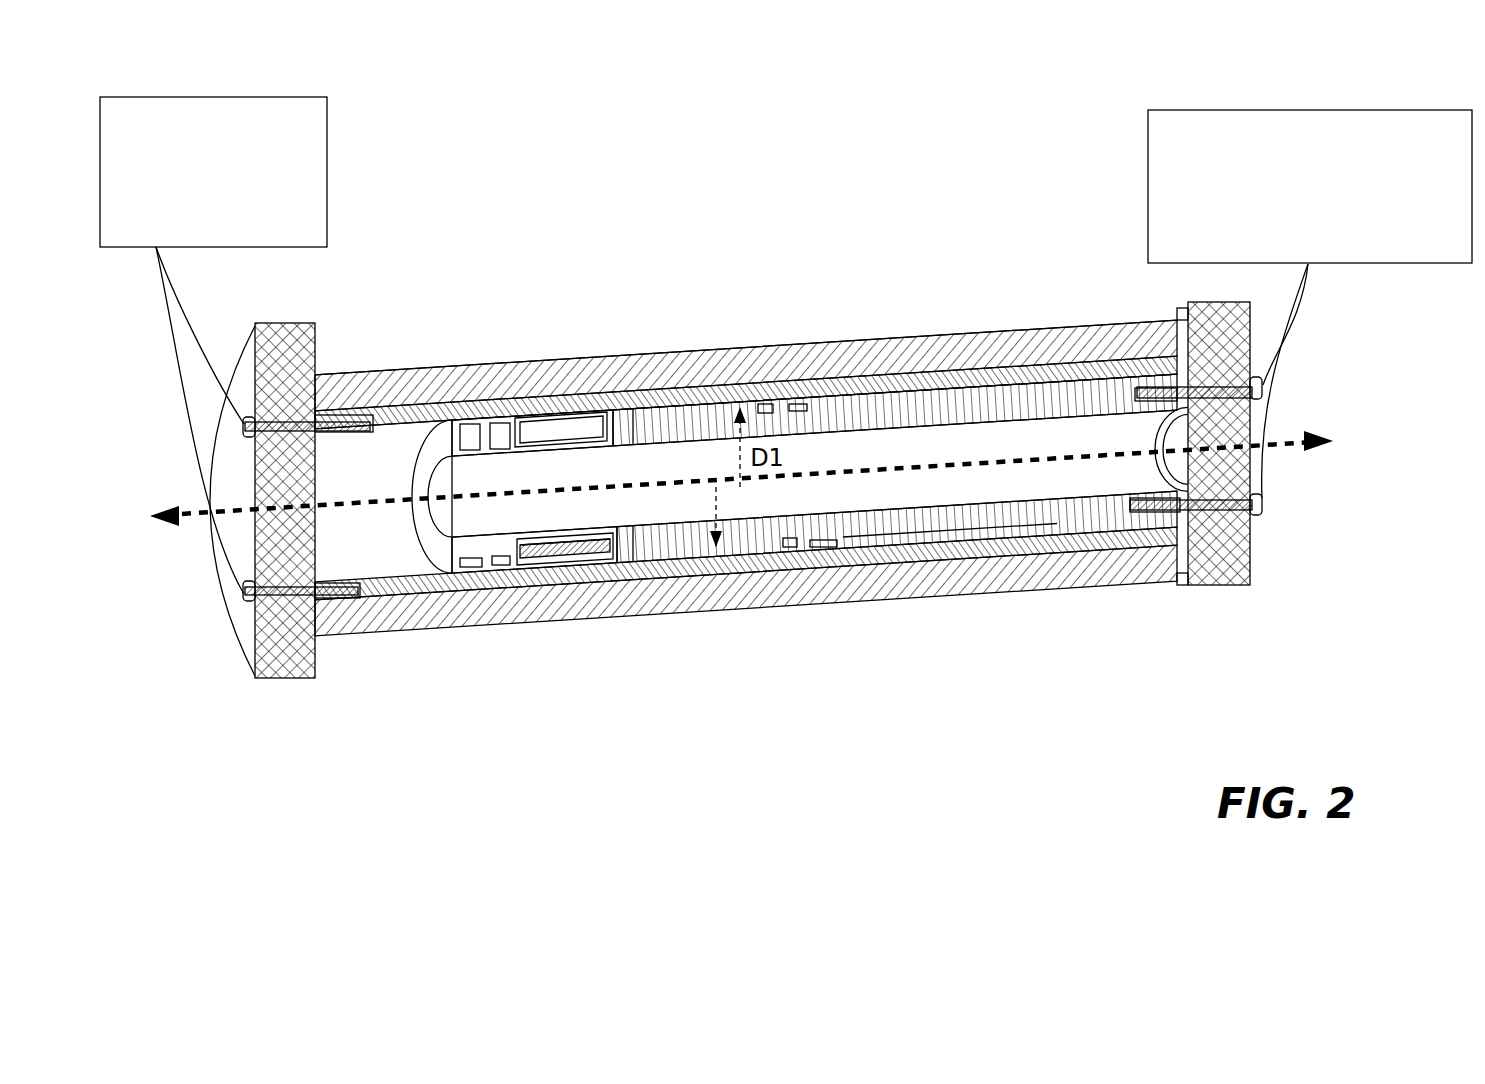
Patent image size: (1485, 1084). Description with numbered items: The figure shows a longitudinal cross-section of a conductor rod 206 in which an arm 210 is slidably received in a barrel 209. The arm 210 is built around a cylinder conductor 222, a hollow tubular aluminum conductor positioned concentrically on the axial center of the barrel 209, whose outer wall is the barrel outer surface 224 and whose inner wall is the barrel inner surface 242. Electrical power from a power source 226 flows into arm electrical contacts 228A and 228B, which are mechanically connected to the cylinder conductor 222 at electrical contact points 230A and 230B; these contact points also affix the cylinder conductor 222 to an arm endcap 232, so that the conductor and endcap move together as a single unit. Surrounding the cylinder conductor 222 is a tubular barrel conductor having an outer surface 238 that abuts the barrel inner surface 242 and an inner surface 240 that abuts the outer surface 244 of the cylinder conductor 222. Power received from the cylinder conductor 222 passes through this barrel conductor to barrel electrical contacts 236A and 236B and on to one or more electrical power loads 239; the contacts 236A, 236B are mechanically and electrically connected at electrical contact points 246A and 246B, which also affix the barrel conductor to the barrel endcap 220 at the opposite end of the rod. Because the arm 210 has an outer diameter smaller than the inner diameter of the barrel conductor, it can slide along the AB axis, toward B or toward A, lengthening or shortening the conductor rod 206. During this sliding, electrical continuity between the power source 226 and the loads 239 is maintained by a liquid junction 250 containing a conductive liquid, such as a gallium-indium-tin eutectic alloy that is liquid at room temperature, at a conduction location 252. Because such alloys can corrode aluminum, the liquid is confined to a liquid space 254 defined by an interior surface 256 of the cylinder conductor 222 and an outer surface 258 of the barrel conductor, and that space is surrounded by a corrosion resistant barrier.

The conductor rod 206 is at (990, 152).
The barrel 209 is at (884, 350).
The arm 210 is at (1004, 534).
The first end cap 220 is at (300, 650).
The cylinder conductor 222 is at (767, 535).
The barrel outer surface 224 is at (448, 368).
The power source 226 is at (1288, 217).
The arm electrical contact 228A is at (1265, 382).
The arm electrical contact 228B is at (1266, 502).
The electrical contact point 230A is at (1134, 381).
The electrical contact point 230B is at (1149, 521).
The arm endcap 232 is at (1246, 586).
The barrel electrical contact 236A is at (244, 432).
The barrel electrical contact 236B is at (244, 598).
The outer surface 238 is at (790, 395).
The electrical power loads 239 is at (191, 215).
The inner surface 240 is at (837, 398).
The barrel inner surface 242 is at (620, 392).
The outer surface 244 is at (950, 398).
The electrical contact point 246A is at (353, 406).
The electrical contact point 246B is at (370, 608).
The liquid junction 250 is at (594, 571).
The conduction location 252 is at (547, 553).
The liquid space 254 is at (568, 556).
The interior surface 256 is at (563, 430).
The outer surface 258 is at (524, 412).